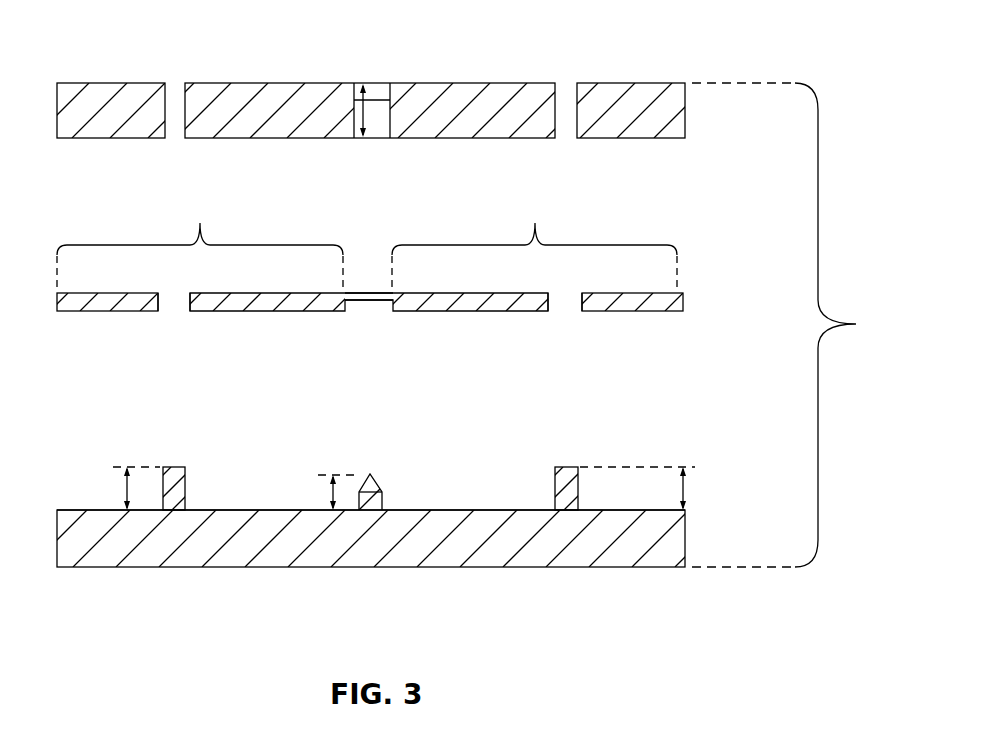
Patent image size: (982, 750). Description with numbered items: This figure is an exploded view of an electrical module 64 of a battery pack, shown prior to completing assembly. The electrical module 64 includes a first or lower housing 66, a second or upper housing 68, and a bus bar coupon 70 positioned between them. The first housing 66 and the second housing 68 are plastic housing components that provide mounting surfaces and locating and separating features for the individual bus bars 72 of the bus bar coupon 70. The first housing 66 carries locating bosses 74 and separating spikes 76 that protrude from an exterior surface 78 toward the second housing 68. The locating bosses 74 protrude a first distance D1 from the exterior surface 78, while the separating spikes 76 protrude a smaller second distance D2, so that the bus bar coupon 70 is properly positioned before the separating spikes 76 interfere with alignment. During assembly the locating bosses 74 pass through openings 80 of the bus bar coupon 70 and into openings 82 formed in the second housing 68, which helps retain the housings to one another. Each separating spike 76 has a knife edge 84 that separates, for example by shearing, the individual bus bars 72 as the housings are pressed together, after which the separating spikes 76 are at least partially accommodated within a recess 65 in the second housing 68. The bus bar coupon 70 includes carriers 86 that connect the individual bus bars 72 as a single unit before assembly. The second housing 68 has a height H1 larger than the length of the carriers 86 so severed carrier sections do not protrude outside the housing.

The electrical module 64 is at (795, 325).
The recess 65 is at (372, 113).
The first housing 66 is at (97, 553).
The second housing 68 is at (104, 92).
The bus bar coupon 70 is at (698, 300).
The individual bus bars 72 is at (367, 242).
The locating bosses 74 is at (172, 466).
The separating spikes 76 is at (395, 496).
The exterior surface 78 is at (62, 508).
The openings 80 is at (172, 305).
The openings 82 is at (176, 87).
The knife edge 84 is at (378, 488).
The carriers 86 is at (364, 283).
The height H1 is at (370, 110).
The first distance D1 is at (122, 488).
The second distance D2 is at (328, 488).